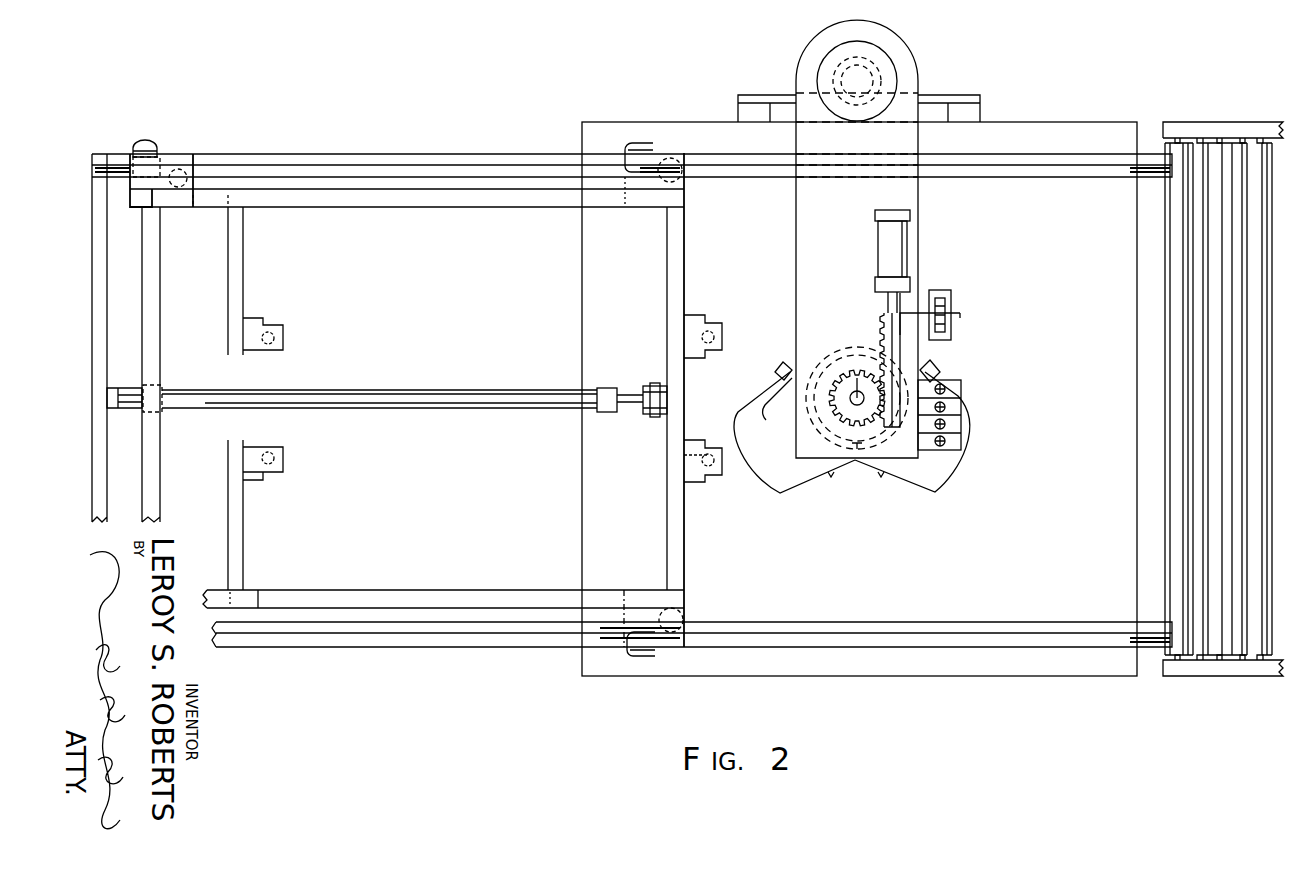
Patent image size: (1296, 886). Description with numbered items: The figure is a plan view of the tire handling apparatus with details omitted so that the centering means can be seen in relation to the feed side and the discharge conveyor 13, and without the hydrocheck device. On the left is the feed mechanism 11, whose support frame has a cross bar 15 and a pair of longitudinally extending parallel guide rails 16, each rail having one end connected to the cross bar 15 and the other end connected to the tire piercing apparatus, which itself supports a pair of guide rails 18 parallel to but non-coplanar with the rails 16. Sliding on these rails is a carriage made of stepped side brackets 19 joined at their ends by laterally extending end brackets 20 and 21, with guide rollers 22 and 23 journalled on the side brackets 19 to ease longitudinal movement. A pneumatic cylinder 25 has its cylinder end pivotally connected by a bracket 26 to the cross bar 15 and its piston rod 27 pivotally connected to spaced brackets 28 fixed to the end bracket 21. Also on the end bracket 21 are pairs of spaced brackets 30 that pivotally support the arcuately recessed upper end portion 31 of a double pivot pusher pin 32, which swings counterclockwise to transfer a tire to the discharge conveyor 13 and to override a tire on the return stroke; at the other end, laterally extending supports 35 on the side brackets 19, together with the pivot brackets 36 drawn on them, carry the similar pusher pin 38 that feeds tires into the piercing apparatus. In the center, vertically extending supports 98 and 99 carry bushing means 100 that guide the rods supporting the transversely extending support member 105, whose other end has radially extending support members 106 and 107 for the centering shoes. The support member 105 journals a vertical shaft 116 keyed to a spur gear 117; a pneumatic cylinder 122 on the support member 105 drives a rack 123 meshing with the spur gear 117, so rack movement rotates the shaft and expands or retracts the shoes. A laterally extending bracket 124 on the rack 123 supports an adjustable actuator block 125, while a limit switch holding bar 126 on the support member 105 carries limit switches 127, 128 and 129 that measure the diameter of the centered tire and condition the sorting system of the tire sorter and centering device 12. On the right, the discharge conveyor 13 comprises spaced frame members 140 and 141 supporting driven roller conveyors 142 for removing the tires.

The feed mechanism 11 is at (482, 668).
The tire sorter and centering device 12 is at (985, 347).
The discharge conveyor 13 is at (1215, 397).
The cross bar 15 is at (97, 197).
The guide rails 16 is at (418, 155).
The guide rails 18 is at (1030, 172).
The side brackets 19 is at (475, 205).
The end bracket 20 is at (160, 268).
The end bracket 21 is at (667, 318).
The guide rollers 22 is at (145, 148).
The guide rollers 23 is at (648, 182).
The pneumatic cylinder 25 is at (400, 390).
The bracket 26 is at (125, 410).
The piston rod 27 is at (630, 403).
The spaced brackets 28 is at (660, 388).
The spaced brackets 30 is at (700, 318).
The upper end portion 31 is at (715, 336).
The double pivot pusher pin 32 is at (695, 458).
The laterally extending supports 35 is at (243, 228).
The bracket 36 is at (258, 318).
The pusher pin 38 is at (276, 335).
The vertically extending support 98 is at (968, 110).
The vertically extending support 99 is at (748, 108).
The bushing means 100 is at (878, 60).
The support member 105 is at (812, 200).
The support member 106 is at (890, 492).
The support member 107 is at (765, 405).
The shaft 116 is at (857, 391).
The spur gear 117 is at (864, 378).
The pneumatic cylinder 122 is at (878, 262).
The rack 123 is at (882, 320).
The laterally extending bracket 124 is at (922, 296).
The adjustable actuator block 125 is at (952, 300).
The limit switch holding bar 126 is at (935, 452).
The limit switch 127 is at (955, 393).
The limit switch 128 is at (955, 408).
The limit switch 129 is at (955, 425).
The frame member 140 is at (1215, 660).
The frame member 141 is at (1208, 128).
The driven roller conveyors 142 is at (1229, 150).